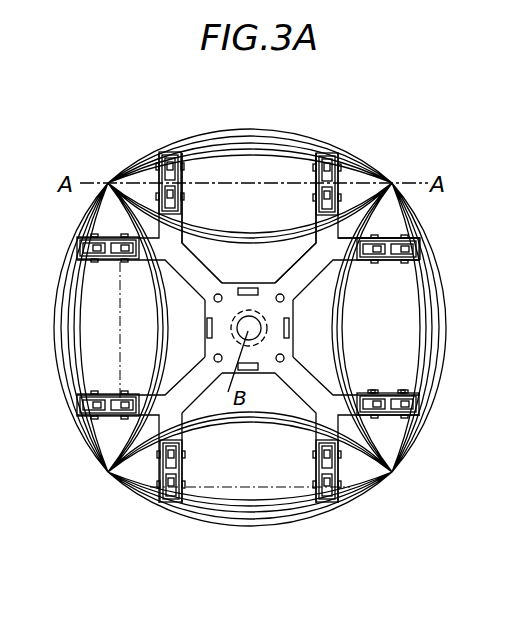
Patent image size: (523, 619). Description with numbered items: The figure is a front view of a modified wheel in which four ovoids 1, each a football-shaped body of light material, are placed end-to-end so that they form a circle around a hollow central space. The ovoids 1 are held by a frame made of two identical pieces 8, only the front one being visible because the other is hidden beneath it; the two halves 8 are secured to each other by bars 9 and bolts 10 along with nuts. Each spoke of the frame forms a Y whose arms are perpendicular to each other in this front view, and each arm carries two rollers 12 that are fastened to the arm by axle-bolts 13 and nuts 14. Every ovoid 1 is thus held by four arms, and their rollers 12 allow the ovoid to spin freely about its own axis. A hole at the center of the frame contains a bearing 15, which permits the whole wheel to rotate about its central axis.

The ovoid 1 is at (268, 143).
The frame piece 8 is at (296, 310).
The bar 9 is at (206, 330).
The bolt 10 is at (214, 300).
The roller 12 is at (183, 172).
The axle-bolt 13 is at (405, 393).
The nut 14 is at (362, 262).
The bearing 15 is at (241, 278).